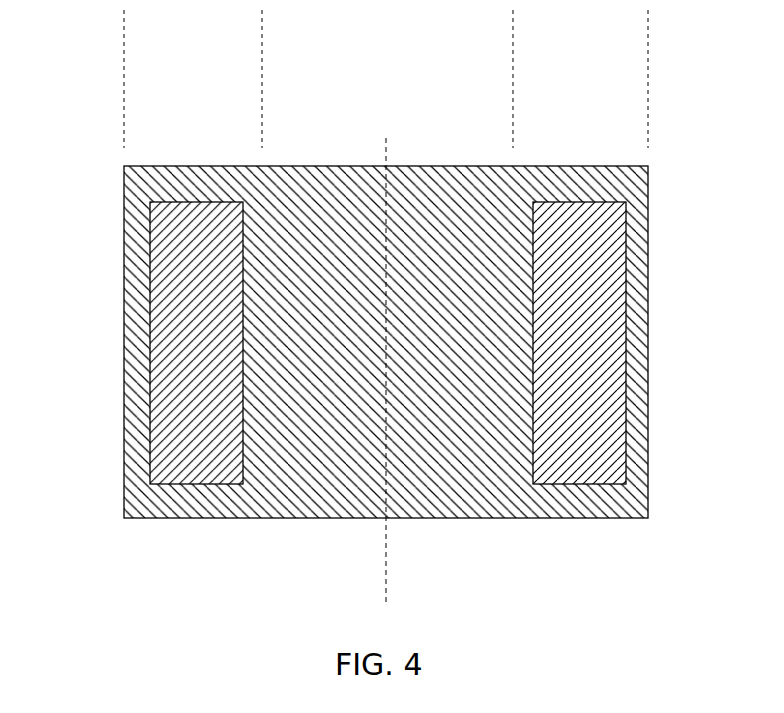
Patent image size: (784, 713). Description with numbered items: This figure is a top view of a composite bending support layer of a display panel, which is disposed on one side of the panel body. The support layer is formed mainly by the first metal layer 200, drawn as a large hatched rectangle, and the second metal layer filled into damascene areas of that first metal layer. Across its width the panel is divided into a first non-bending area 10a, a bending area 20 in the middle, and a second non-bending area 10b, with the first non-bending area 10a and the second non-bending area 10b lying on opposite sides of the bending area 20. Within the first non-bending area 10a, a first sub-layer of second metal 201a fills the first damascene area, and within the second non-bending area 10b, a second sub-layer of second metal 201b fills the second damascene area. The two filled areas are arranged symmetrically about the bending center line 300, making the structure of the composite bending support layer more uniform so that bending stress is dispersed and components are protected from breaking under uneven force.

The first non-bending area 10a is at (261, 90).
The second non-bending area 10b is at (647, 90).
The bending area 20 is at (512, 90).
The first metal layer 200 is at (332, 495).
The first sub-layer of second metal 201a is at (162, 323).
The second sub-layer of second metal 201b is at (610, 337).
The bending center line 300 is at (387, 543).